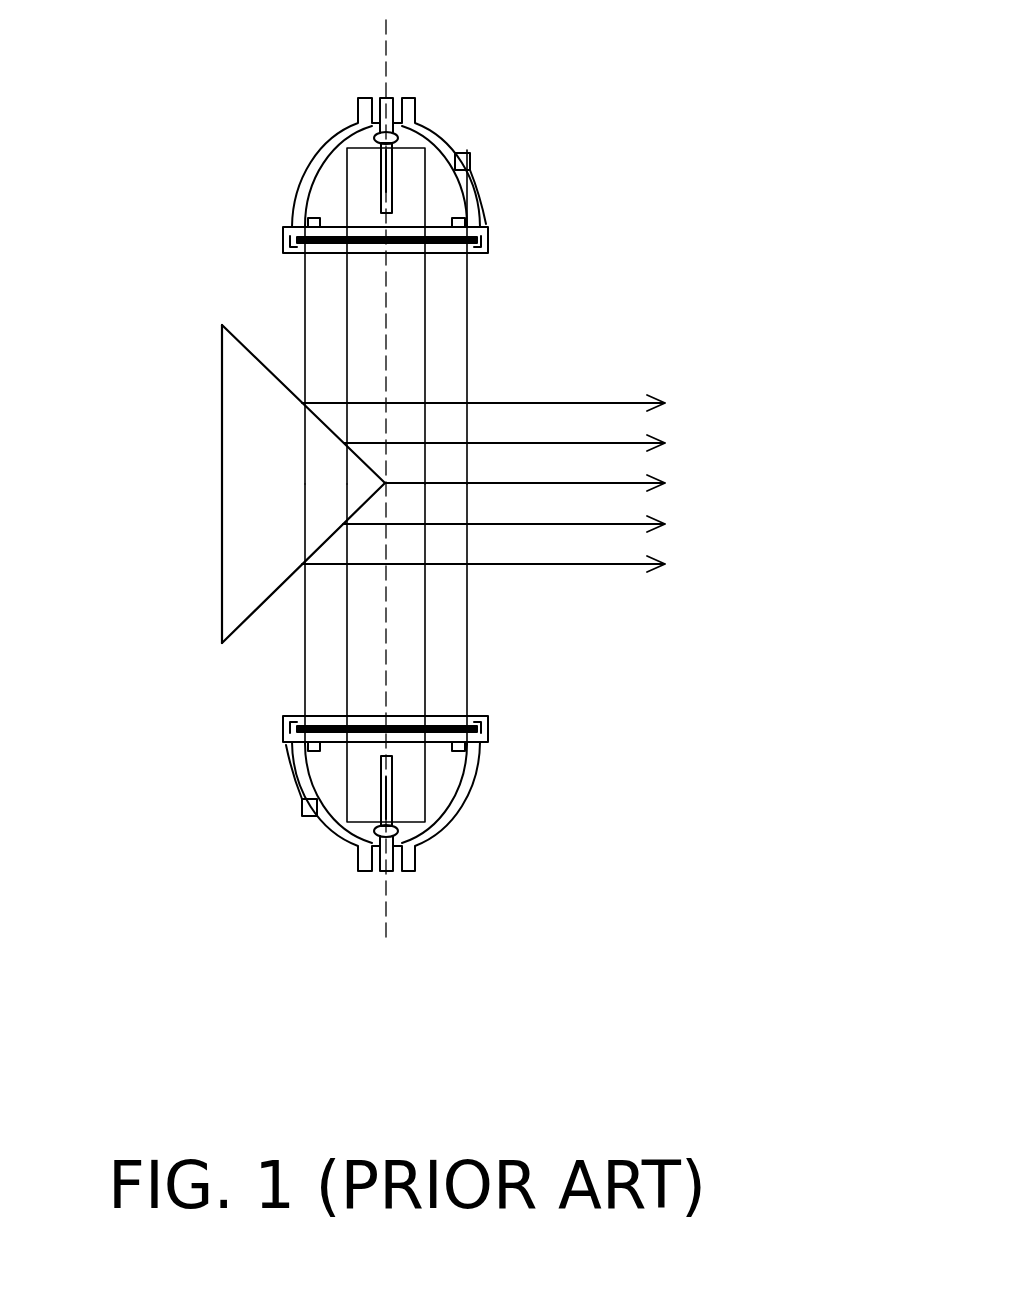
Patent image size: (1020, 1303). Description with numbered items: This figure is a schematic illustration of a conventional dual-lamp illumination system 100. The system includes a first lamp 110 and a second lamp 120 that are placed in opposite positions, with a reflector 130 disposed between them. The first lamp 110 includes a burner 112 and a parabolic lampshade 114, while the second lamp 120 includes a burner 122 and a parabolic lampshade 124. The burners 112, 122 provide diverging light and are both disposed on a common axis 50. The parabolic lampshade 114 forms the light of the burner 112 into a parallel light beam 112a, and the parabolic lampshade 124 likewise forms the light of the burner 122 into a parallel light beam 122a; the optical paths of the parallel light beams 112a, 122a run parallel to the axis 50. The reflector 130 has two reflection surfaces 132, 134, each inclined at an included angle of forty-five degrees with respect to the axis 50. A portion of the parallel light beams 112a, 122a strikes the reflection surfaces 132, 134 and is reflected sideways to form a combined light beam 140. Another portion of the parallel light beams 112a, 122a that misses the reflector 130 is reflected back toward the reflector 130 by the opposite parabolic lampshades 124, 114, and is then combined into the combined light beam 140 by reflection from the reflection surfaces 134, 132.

The axis 50 is at (387, 42).
The dual-lamp illumination system 100 is at (417, 533).
The first lamp 110 is at (470, 166).
The burner 112 is at (388, 162).
The parallel light beam 112a is at (482, 302).
The parabolic lampshade 114 is at (467, 193).
The second lamp 120 is at (478, 799).
The burner 122 is at (387, 862).
The parallel light beam 122a is at (483, 673).
The parabolic lampshade 124 is at (458, 782).
The reflector 130 is at (243, 479).
The reflection surface 132 is at (260, 328).
The reflection surface 134 is at (257, 646).
The combined light beam 140 is at (572, 582).